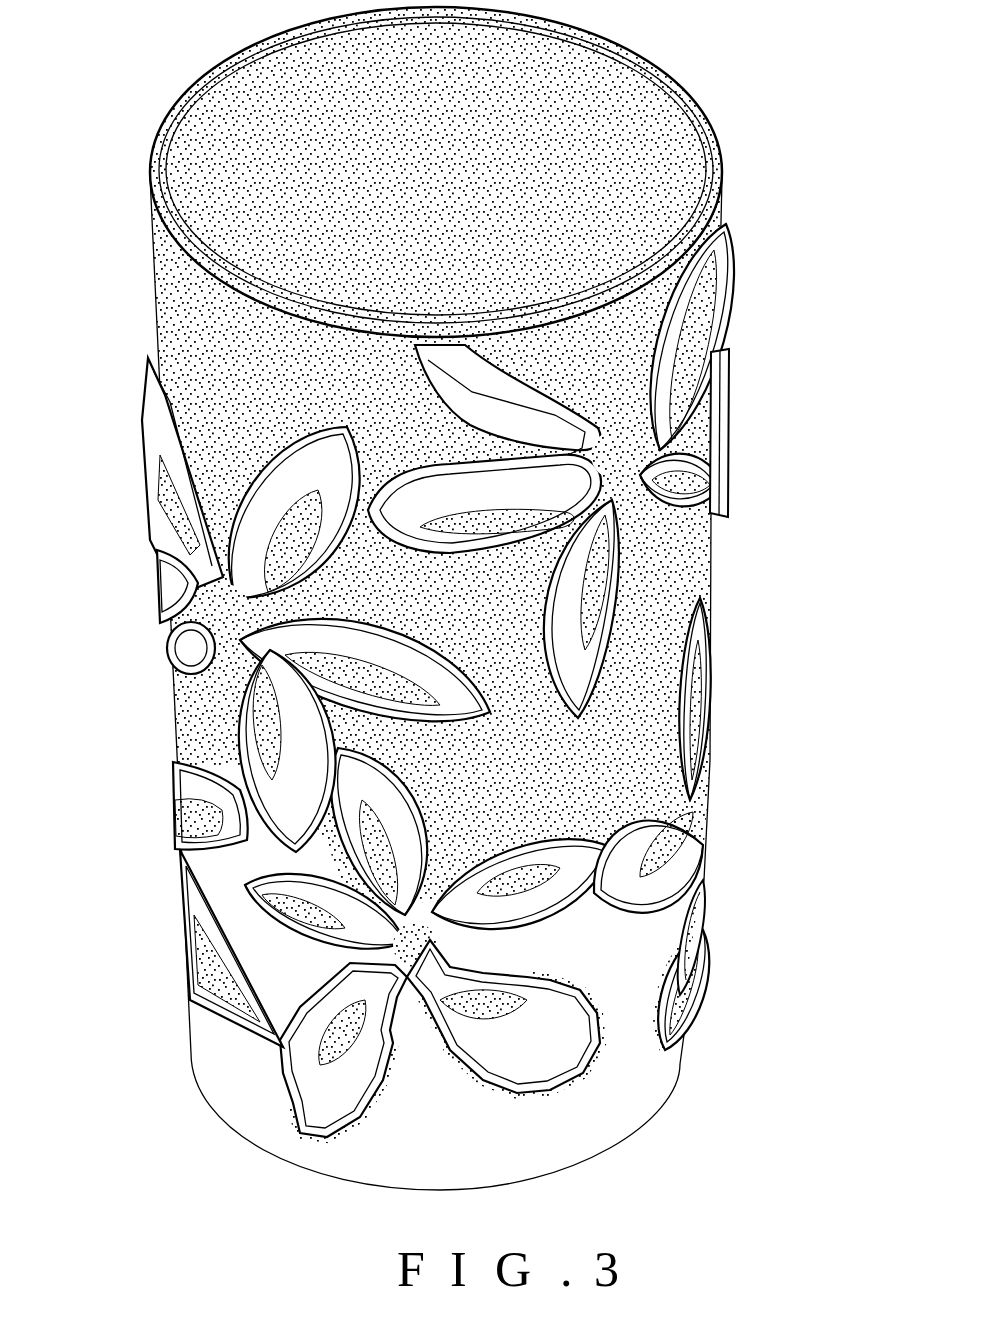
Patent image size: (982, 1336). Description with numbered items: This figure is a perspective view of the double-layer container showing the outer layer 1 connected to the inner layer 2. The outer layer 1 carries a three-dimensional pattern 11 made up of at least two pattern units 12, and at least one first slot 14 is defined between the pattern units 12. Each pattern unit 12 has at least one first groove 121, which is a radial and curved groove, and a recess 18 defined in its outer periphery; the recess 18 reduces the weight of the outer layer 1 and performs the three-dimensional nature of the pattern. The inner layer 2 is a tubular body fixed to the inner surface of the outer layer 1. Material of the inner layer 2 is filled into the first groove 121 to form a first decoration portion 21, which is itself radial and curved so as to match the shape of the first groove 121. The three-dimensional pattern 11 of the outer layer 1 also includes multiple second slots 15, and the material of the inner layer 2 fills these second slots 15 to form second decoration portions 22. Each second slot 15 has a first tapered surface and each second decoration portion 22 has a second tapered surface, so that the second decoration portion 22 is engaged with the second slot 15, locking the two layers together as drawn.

The outer layer 1 is at (670, 1065).
The inner layer 2 is at (645, 126).
The 3-D pattern 11 is at (311, 399).
The pattern unit 12 is at (473, 392).
The first groove 121 is at (700, 309).
The first slot 14 is at (177, 715).
The second slot 15 is at (598, 1066).
The recess 18 is at (146, 226).
The first decoration portion 21 is at (650, 450).
The second decoration portion 22 is at (571, 1088).